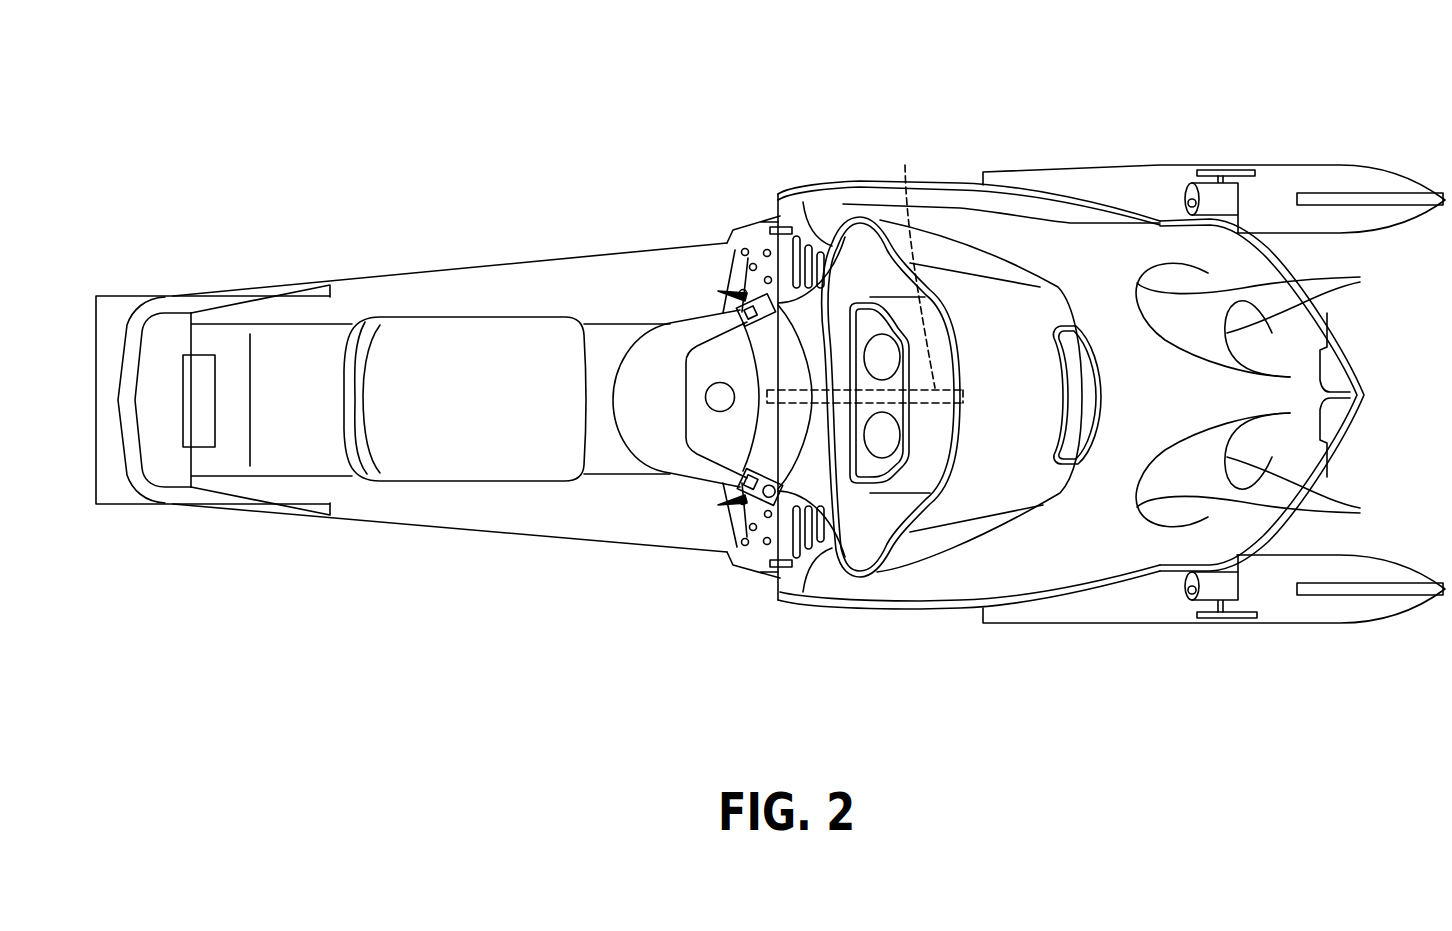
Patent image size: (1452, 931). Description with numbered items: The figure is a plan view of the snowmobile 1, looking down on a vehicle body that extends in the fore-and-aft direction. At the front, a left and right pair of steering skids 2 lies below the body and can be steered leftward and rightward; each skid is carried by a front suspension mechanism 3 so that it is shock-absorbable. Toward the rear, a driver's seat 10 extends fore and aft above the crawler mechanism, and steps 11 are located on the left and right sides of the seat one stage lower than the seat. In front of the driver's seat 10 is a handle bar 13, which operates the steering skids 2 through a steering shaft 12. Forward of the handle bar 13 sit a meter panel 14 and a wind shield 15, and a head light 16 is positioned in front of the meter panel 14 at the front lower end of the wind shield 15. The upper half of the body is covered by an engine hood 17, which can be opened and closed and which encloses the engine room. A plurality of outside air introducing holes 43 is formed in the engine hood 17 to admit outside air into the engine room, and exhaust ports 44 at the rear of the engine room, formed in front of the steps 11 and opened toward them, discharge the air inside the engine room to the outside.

The snowmobile 1 is at (693, 124).
The steering skids 2 is at (1350, 177).
The front suspension mechanism 3 is at (1224, 197).
The driver's seat 10 is at (462, 465).
The steps 11 is at (476, 272).
The steering shaft 12 is at (905, 165).
The handle bar 13 is at (732, 550).
The meter panel 14 is at (870, 481).
The wind shield 15 is at (1000, 325).
The head light 16 is at (1070, 440).
The engine hood 17 is at (1113, 250).
The outside air introducing holes 43 is at (1265, 395).
The exhaust ports 44 is at (800, 186).